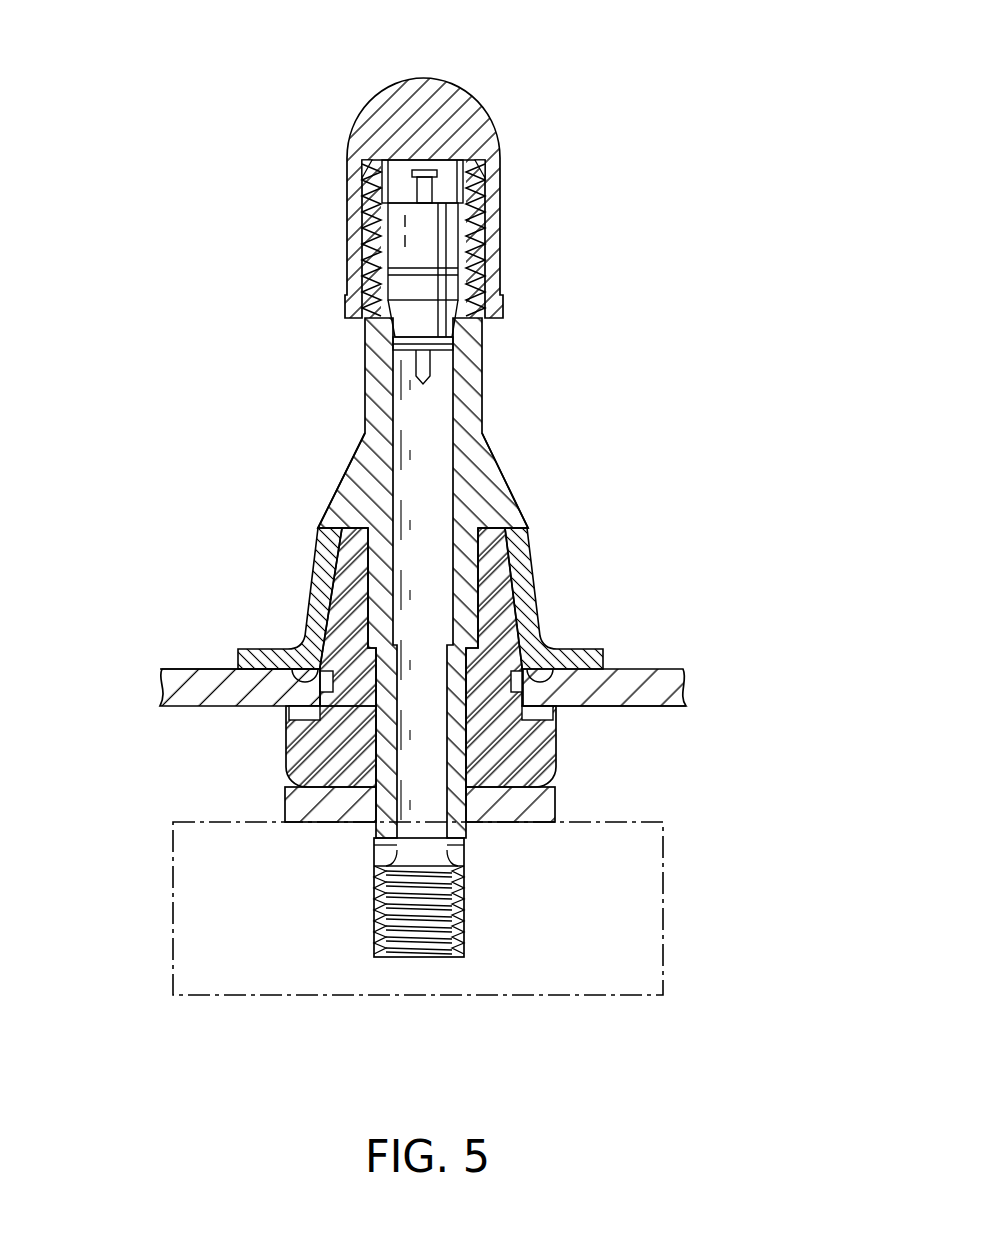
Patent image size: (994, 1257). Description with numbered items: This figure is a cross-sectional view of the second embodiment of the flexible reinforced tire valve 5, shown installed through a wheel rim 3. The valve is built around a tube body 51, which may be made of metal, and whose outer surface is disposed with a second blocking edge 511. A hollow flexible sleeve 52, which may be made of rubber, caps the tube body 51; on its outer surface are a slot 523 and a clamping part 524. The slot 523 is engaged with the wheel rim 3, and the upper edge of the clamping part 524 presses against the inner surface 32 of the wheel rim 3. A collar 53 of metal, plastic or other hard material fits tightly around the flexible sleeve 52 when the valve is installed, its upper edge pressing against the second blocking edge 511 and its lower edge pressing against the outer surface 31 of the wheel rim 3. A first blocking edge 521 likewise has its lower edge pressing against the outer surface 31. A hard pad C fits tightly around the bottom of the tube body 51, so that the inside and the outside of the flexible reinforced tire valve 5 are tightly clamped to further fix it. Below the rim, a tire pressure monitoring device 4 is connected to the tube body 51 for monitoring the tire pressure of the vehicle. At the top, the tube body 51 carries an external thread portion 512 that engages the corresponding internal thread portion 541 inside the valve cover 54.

The flexible reinforced tire valve 5 is at (590, 322).
The valve cover 54 is at (468, 97).
The external thread portion 512 is at (483, 228).
The internal thread portion 541 is at (475, 240).
The tube body 51 is at (365, 408).
The second blocking edge 511 is at (527, 540).
The collar 53 is at (320, 590).
The flexible sleeve 52 is at (490, 710).
The first blocking edge 521 is at (553, 667).
The slot 523 is at (317, 628).
The clamping part 524 is at (305, 750).
The hard pad C is at (555, 803).
The wheel rim 3 is at (630, 673).
The outer surface 31 is at (187, 669).
The inner surface 32 is at (640, 708).
The tire pressure monitoring device 4 is at (162, 872).